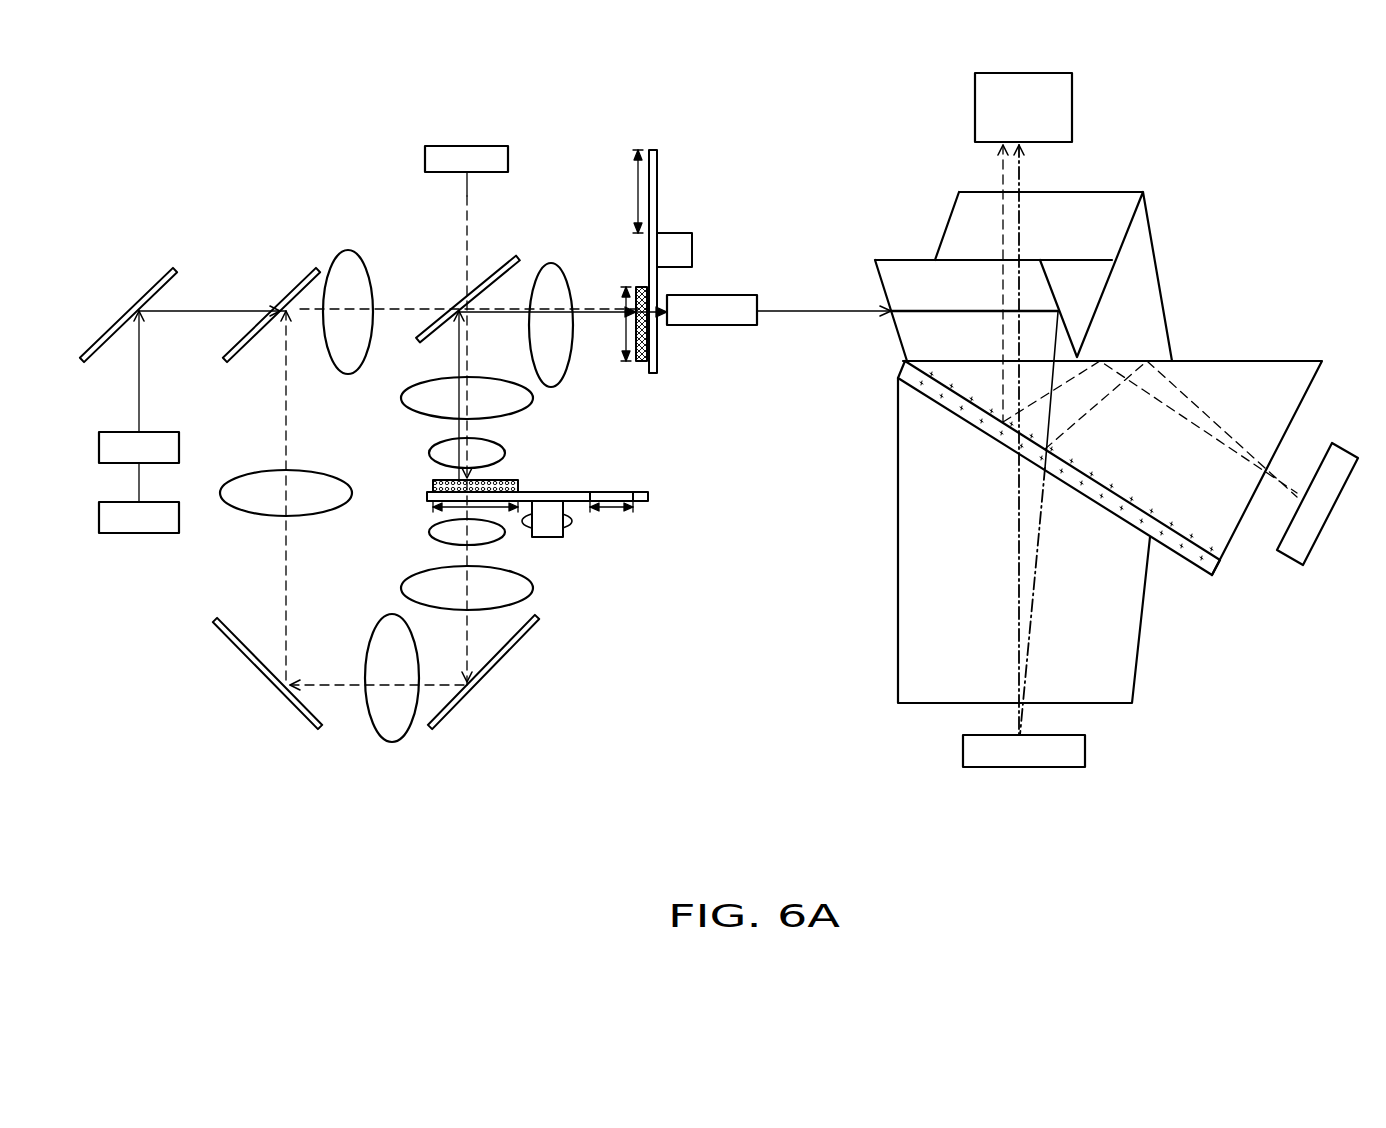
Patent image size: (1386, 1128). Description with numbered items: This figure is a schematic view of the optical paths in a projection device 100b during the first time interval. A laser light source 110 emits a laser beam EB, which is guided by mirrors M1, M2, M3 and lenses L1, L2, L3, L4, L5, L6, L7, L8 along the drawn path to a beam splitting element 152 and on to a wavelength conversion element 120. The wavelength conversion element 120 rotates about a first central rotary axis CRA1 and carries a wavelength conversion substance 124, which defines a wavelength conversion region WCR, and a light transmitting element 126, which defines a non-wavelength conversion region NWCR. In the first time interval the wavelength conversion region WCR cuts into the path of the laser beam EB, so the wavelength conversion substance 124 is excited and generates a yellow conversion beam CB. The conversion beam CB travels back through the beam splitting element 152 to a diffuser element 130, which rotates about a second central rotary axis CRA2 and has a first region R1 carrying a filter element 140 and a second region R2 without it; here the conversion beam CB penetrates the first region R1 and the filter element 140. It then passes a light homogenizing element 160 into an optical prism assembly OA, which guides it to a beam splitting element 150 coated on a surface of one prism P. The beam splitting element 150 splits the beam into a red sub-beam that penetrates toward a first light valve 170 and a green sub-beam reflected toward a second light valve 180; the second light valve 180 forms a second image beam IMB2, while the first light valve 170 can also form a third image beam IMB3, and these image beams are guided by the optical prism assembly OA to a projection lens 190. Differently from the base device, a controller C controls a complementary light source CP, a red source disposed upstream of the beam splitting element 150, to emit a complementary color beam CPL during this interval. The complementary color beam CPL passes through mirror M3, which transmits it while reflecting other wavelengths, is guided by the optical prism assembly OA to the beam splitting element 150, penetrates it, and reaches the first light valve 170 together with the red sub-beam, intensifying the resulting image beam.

The projection device 100b is at (1375, 825).
The laser light source 110 is at (444, 156).
The wavelength conversion element 120 is at (555, 533).
The wavelength conversion substance 124 is at (508, 482).
The light transmitting element 126 is at (612, 492).
The diffuser element 130 is at (687, 260).
The filter element 140 is at (643, 365).
The beam splitting element 150 is at (1214, 575).
The beam splitting element 152 is at (517, 260).
The light homogenizing element 160 is at (710, 318).
The first light valve 170 is at (1072, 750).
The second light valve 180 is at (1316, 524).
The projection lens 190 is at (1068, 107).
The optical prism assembly OA is at (1105, 447).
The prism P is at (910, 558).
The laser beam EB is at (463, 202).
The conversion beam CB is at (458, 353).
The complementary color beam CPL is at (139, 402).
The complementary light source CP is at (105, 448).
The controller C is at (105, 518).
The mirror M1 is at (515, 643).
The mirror M2 is at (242, 647).
The mirror M3 is at (305, 275).
The lens L1 is at (410, 398).
The lens L2 is at (437, 453).
The lens L3 is at (437, 537).
The lens L4 is at (410, 588).
The lens L5 is at (370, 730).
The lens L6 is at (262, 478).
The lens L7 is at (352, 262).
The lens L8 is at (560, 280).
The first region R1 is at (613, 324).
The second region R2 is at (621, 191).
The first central rotary axis CRA1 is at (552, 535).
The second central rotary axis CRA2 is at (673, 242).
The wavelength conversion region WCR is at (452, 512).
The non-wavelength conversion region NWCR is at (610, 510).
The second image beam IMB2 is at (1000, 175).
The third image beam IMB3 is at (1022, 175).